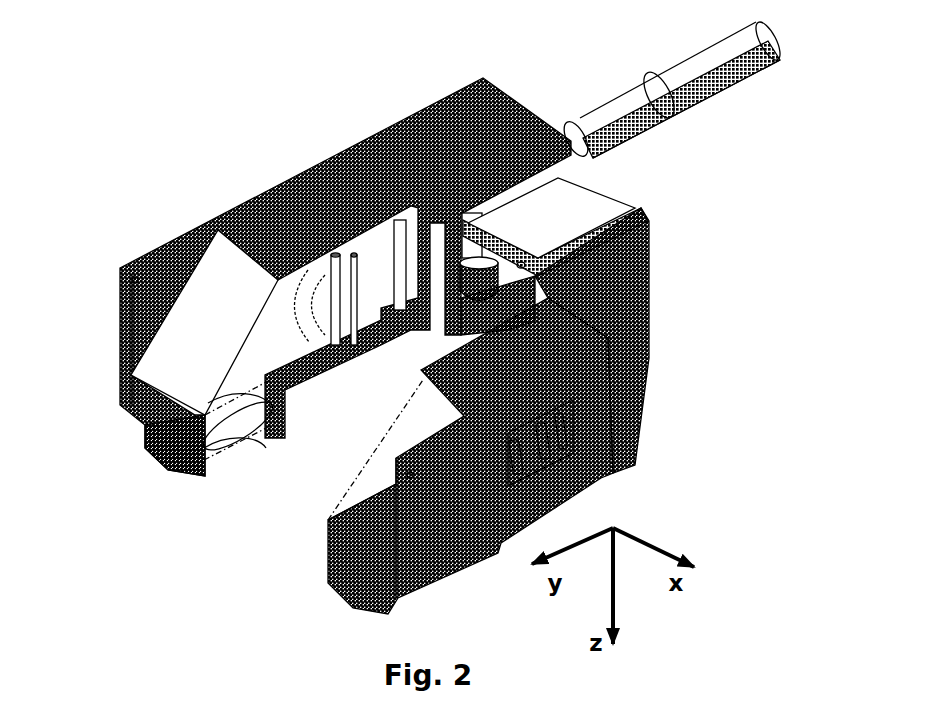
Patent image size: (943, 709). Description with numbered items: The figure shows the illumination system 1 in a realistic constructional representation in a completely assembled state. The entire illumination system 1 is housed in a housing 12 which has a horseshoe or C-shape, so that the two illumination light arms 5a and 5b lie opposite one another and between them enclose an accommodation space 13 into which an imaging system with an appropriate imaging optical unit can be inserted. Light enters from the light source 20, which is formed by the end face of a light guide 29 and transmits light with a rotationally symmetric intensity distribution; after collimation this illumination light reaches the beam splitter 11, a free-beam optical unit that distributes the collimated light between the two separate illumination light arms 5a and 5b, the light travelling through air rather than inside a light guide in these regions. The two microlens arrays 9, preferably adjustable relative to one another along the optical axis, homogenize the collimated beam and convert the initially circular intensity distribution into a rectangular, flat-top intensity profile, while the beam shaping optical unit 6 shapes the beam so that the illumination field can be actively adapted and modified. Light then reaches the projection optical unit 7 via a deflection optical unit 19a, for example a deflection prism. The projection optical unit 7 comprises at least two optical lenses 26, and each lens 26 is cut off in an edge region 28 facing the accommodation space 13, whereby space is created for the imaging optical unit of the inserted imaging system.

The illumination system 1 is at (435, 316).
The illumination light arm 5a is at (260, 210).
The illumination light arm 5b is at (527, 358).
The beam shaping optical unit 6 is at (300, 315).
The projection optical unit 7 is at (196, 438).
The microlens array 9 is at (328, 265).
The beam splitter 11 is at (392, 233).
The housing 12 is at (603, 315).
The accommodation space 13 is at (313, 445).
The deflection optical unit 19a is at (197, 280).
The light source 20 is at (569, 130).
The optical lens 26 is at (472, 270).
The edge region 28 is at (213, 443).
The light guide 29 is at (693, 67).